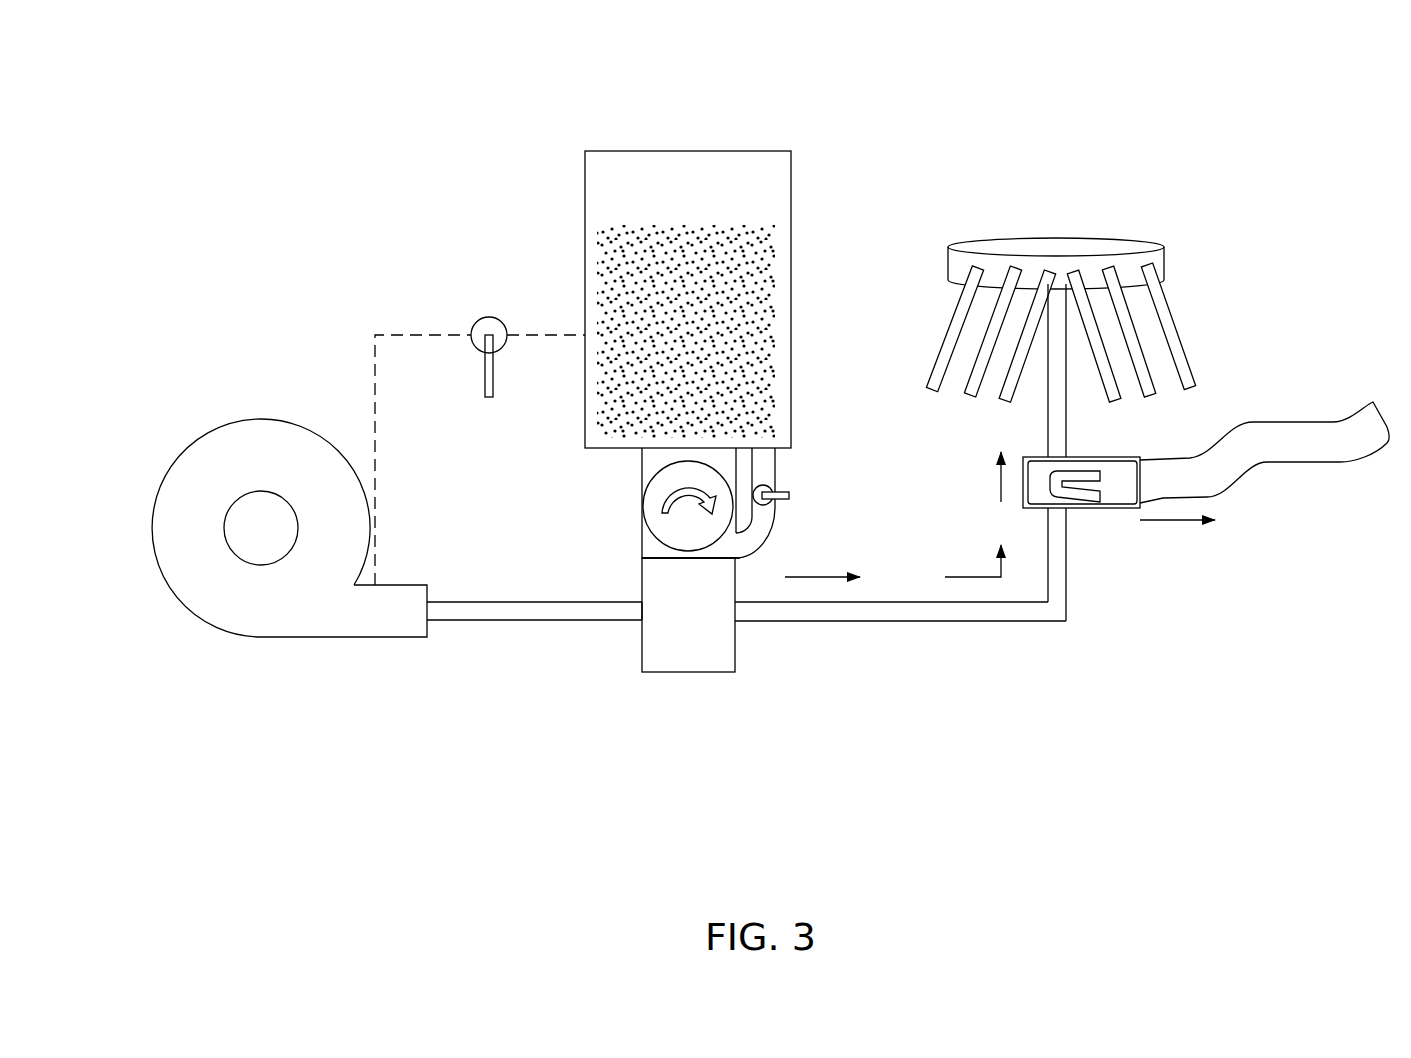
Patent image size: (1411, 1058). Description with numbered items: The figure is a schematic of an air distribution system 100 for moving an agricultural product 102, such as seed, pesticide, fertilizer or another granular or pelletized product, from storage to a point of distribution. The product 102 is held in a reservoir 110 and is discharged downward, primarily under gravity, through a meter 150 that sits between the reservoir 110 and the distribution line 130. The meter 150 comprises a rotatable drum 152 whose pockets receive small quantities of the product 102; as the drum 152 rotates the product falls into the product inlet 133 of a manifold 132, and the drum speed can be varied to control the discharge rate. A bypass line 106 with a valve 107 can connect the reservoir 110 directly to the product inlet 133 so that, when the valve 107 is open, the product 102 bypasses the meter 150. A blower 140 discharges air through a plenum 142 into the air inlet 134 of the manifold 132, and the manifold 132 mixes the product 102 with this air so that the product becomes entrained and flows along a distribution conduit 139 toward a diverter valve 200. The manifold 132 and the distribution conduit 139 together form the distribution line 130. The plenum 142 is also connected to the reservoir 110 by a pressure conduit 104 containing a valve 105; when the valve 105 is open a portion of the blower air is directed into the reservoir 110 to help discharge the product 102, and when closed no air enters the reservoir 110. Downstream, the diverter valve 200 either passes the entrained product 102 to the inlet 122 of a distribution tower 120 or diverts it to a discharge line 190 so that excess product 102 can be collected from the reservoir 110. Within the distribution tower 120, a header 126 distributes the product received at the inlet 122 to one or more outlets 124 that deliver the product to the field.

The air distribution system 100 is at (226, 92).
The agricultural product 102 is at (775, 275).
The pressure conduit 104 is at (416, 333).
The valve 105 is at (497, 317).
The bypass line 106 is at (777, 456).
The valve 107 is at (790, 494).
The reservoir 110 is at (791, 172).
The distribution tower 120 is at (1045, 200).
The inlet 122 is at (1069, 432).
The outlets 124 is at (1172, 298).
The header 126 is at (1105, 243).
The distribution line 130 is at (645, 685).
The manifold 132 is at (688, 673).
The product inlet 133 is at (667, 553).
The air inlet 134 is at (638, 622).
The distribution conduit 139 is at (905, 622).
The blower 140 is at (226, 408).
The plenum 142 is at (403, 638).
The meter 150 is at (606, 491).
The rotatable drum 152 is at (652, 510).
The discharge line 190 is at (1303, 462).
The diverter valve 200 is at (985, 487).